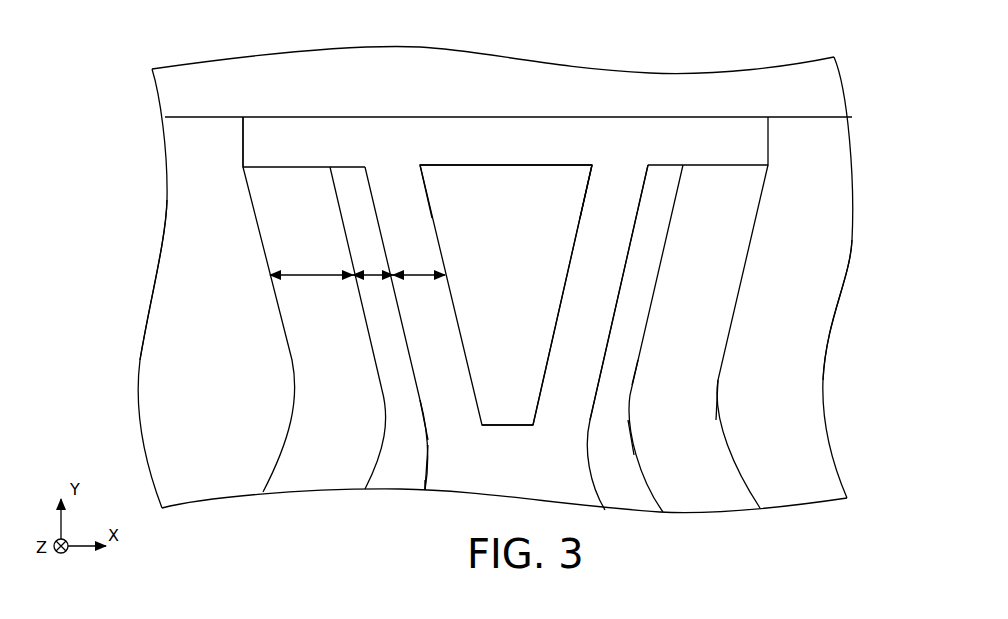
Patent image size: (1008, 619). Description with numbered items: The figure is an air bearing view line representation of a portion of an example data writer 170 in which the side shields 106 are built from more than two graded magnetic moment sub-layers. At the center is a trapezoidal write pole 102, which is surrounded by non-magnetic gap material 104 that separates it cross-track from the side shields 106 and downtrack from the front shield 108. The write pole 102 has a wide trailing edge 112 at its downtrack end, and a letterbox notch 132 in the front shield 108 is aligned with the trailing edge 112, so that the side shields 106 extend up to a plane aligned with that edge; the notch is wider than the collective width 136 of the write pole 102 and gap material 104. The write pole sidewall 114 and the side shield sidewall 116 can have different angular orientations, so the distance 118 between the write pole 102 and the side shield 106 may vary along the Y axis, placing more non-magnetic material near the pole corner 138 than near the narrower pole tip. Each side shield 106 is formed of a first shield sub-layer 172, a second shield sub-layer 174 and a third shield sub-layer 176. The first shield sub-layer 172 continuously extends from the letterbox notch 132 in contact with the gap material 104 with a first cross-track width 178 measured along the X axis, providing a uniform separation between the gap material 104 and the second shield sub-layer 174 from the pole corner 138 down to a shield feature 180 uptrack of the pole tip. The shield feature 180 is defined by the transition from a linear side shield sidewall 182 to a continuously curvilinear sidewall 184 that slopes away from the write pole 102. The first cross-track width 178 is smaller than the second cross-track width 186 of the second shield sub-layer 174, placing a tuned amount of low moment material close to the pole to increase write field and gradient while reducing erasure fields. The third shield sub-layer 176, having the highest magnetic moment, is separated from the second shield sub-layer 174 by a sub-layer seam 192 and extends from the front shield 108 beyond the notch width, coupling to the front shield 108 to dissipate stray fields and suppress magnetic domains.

The data writer 170 is at (118, 54).
The front shield 108 is at (170, 93).
The side shields 106 is at (155, 275).
The write pole 102 is at (491, 350).
The non-magnetic gap material 104 is at (488, 452).
The trailing edge 112 is at (484, 165).
The write pole sidewall 114 is at (567, 262).
The side shield sidewall 116 is at (637, 207).
The distance 118 is at (414, 277).
The letterbox notch 132 is at (240, 165).
The collective width 136 is at (423, 170).
The pole corner 138 is at (588, 171).
The first shield sub-layer 172 is at (337, 195).
The second shield sub-layer 174 is at (321, 420).
The third shield sub-layer 176 is at (190, 420).
The first cross-track width 178 is at (375, 275).
The shield feature 180 is at (431, 468).
The linear side shield sidewall 182 is at (427, 412).
The curvilinear sidewall 184 is at (428, 471).
The second cross-track width 186 is at (322, 277).
The sub-layer seam 192 is at (718, 400).